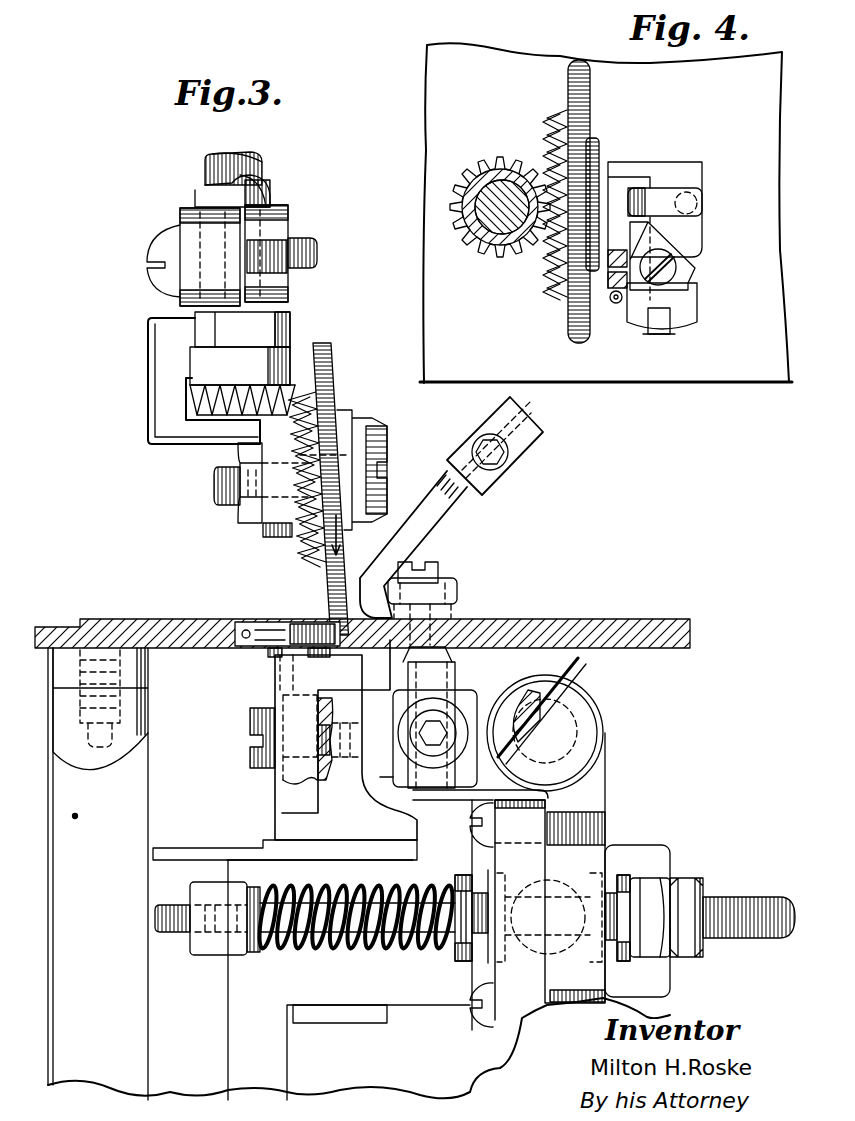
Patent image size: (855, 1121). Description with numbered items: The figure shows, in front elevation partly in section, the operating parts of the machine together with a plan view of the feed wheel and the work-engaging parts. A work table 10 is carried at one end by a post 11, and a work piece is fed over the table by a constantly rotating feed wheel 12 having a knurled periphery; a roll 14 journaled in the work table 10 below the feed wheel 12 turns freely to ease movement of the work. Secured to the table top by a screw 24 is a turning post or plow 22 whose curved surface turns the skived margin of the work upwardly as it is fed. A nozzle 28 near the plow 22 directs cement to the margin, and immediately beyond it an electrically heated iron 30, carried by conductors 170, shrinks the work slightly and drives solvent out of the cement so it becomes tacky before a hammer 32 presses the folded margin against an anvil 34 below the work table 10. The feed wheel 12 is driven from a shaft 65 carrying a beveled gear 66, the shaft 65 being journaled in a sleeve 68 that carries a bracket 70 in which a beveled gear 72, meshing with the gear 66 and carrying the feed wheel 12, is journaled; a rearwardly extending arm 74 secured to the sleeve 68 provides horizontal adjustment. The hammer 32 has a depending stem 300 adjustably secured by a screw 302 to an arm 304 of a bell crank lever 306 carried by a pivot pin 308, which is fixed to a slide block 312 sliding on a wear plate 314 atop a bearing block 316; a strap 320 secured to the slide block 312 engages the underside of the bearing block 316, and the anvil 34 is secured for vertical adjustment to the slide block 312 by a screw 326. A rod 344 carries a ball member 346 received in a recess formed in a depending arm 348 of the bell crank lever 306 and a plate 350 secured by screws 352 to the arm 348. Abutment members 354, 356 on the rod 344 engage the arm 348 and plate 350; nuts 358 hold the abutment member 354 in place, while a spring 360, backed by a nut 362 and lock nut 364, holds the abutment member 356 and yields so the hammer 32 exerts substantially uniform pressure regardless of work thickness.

In FIG. 3, the work table 10 is at (540, 618).
In FIG. 4, the work table 10 is at (658, 381).
In FIG. 3, the post 11 is at (57, 833).
In FIG. 3, the feed wheel 12 is at (336, 380).
In FIG. 4, the feed wheel 12 is at (573, 80).
In FIG. 3, the roll 14 is at (272, 618).
In FIG. 3, the turning post or plow 22 is at (457, 597).
In FIG. 4, the turning post or plow 22 is at (690, 301).
In FIG. 4, the screw 24 is at (690, 266).
In FIG. 4, the nozzle 28 is at (614, 303).
In FIG. 3, the electrically heated iron 30 is at (413, 532).
In FIG. 4, the electrically heated iron 30 is at (628, 253).
In FIG. 3, the hammer 32 is at (440, 577).
In FIG. 4, the hammer 32 is at (663, 200).
In FIG. 3, the anvil 34 is at (447, 677).
In FIG. 4, the anvil 34 is at (628, 182).
In FIG. 3, the shaft 65 is at (262, 170).
In FIG. 4, the shaft 65 is at (488, 233).
In FIG. 3, the beveled gear 66 is at (281, 373).
In FIG. 4, the beveled gear 66 is at (472, 180).
In FIG. 3, the sleeve 68 is at (272, 197).
In FIG. 3, the bracket 70 is at (160, 368).
In FIG. 3, the beveled gear 72 is at (305, 558).
In FIG. 4, the beveled gear 72 is at (550, 275).
In FIG. 3, the rearwardly extending arm 74 is at (282, 235).
In FIG. 3, the conductors 170 is at (518, 462).
In FIG. 3, the depending stem 300 is at (545, 675).
In FIG. 4, the depending stem 300 is at (698, 201).
In FIG. 3, the screw 302 is at (441, 740).
In FIG. 3, the arm 304 is at (483, 793).
In FIG. 3, the bell crank lever 306 is at (606, 738).
In FIG. 3, the pivot pin 308 is at (563, 708).
In FIG. 3, the slide block 312 is at (378, 765).
In FIG. 3, the wear plate 314 is at (263, 850).
In FIG. 3, the bearing block 316 is at (240, 872).
In FIG. 3, the strap 320 is at (336, 1024).
In FIG. 3, the screw 326 is at (250, 728).
In FIG. 3, the rod 344 is at (718, 896).
In FIG. 3, the ball member 346 is at (560, 880).
In FIG. 3, the depending arm 348 is at (588, 975).
In FIG. 3, the plate 350 is at (500, 973).
In FIG. 3, the screws 352 is at (478, 1028).
In FIG. 3, the abutment member 354 is at (624, 873).
In FIG. 3, the abutment member 356 is at (452, 950).
In FIG. 3, the nuts 358 is at (665, 878).
In FIG. 3, the spring 360 is at (292, 955).
In FIG. 3, the nut 362 is at (230, 955).
In FIG. 3, the lock nut 364 is at (190, 948).